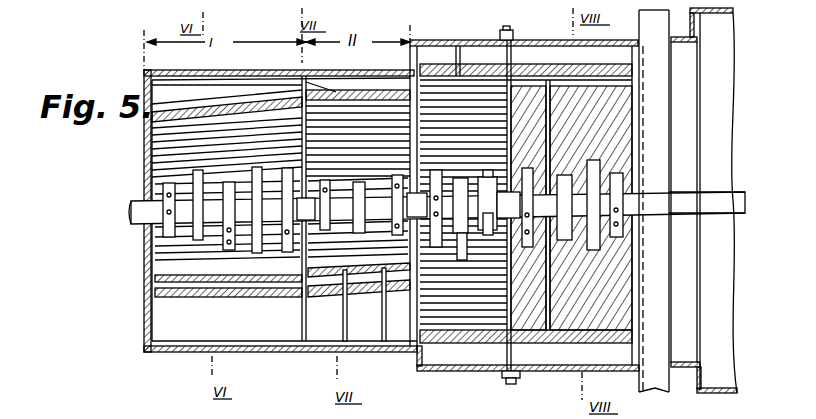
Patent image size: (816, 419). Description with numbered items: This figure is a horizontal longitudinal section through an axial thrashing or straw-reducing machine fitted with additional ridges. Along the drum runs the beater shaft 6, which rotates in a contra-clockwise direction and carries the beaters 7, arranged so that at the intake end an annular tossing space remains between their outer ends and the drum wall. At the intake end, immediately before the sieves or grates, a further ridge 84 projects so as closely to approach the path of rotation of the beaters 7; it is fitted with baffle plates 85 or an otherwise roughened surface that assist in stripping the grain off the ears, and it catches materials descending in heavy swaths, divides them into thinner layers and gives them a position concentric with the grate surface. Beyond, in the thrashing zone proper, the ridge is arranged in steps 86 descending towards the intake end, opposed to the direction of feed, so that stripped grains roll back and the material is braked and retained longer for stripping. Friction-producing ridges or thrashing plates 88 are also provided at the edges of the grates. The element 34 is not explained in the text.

The beater shaft 6 is at (686, 212).
The beaters 7 is at (574, 183).
The roller disc 34 is at (181, 226).
The ridge 84 is at (168, 319).
The baffle plates 85 is at (258, 278).
The steps 86 is at (368, 271).
The ridges or thrashing plates 88 is at (510, 62).